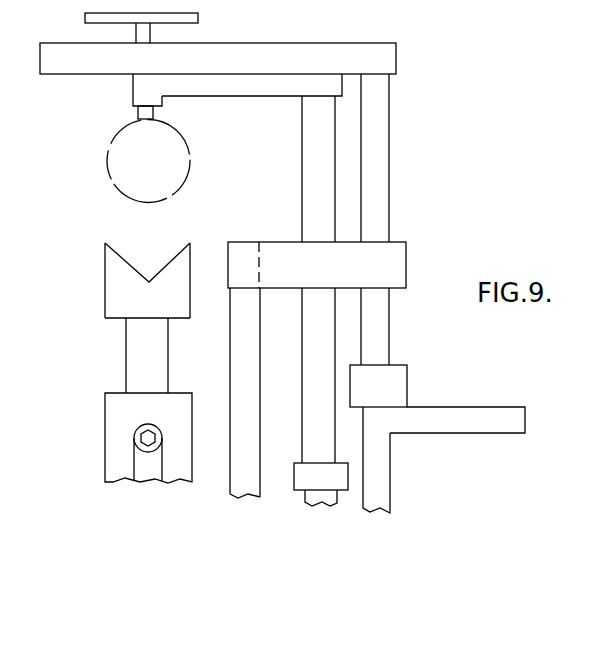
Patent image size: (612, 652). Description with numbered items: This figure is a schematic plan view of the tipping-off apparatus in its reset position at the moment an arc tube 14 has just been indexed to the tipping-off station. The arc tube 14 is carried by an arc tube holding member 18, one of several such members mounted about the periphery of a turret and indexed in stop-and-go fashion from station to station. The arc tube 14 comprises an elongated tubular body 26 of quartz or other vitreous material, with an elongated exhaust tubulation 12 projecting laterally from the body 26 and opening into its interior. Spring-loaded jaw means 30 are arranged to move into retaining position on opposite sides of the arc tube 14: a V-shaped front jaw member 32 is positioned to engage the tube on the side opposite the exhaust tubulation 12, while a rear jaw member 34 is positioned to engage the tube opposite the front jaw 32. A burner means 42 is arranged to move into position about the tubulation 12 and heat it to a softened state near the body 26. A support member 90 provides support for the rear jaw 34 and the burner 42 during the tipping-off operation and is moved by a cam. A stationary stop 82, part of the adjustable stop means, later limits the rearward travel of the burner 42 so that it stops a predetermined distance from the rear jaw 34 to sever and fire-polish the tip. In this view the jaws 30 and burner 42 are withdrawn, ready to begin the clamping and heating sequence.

The arc tube holding member 18 is at (198, 16).
The burner means 42 is at (388, 65).
The rear jaw member 34 is at (271, 86).
The jaw means 30 is at (133, 89).
The front jaw member 32 is at (110, 263).
The exhaust tubulation 12 is at (153, 112).
The arc tube 14 is at (113, 150).
The tubular body 26 is at (190, 170).
The support member 90 is at (398, 248).
The stationary stop 82 is at (481, 425).